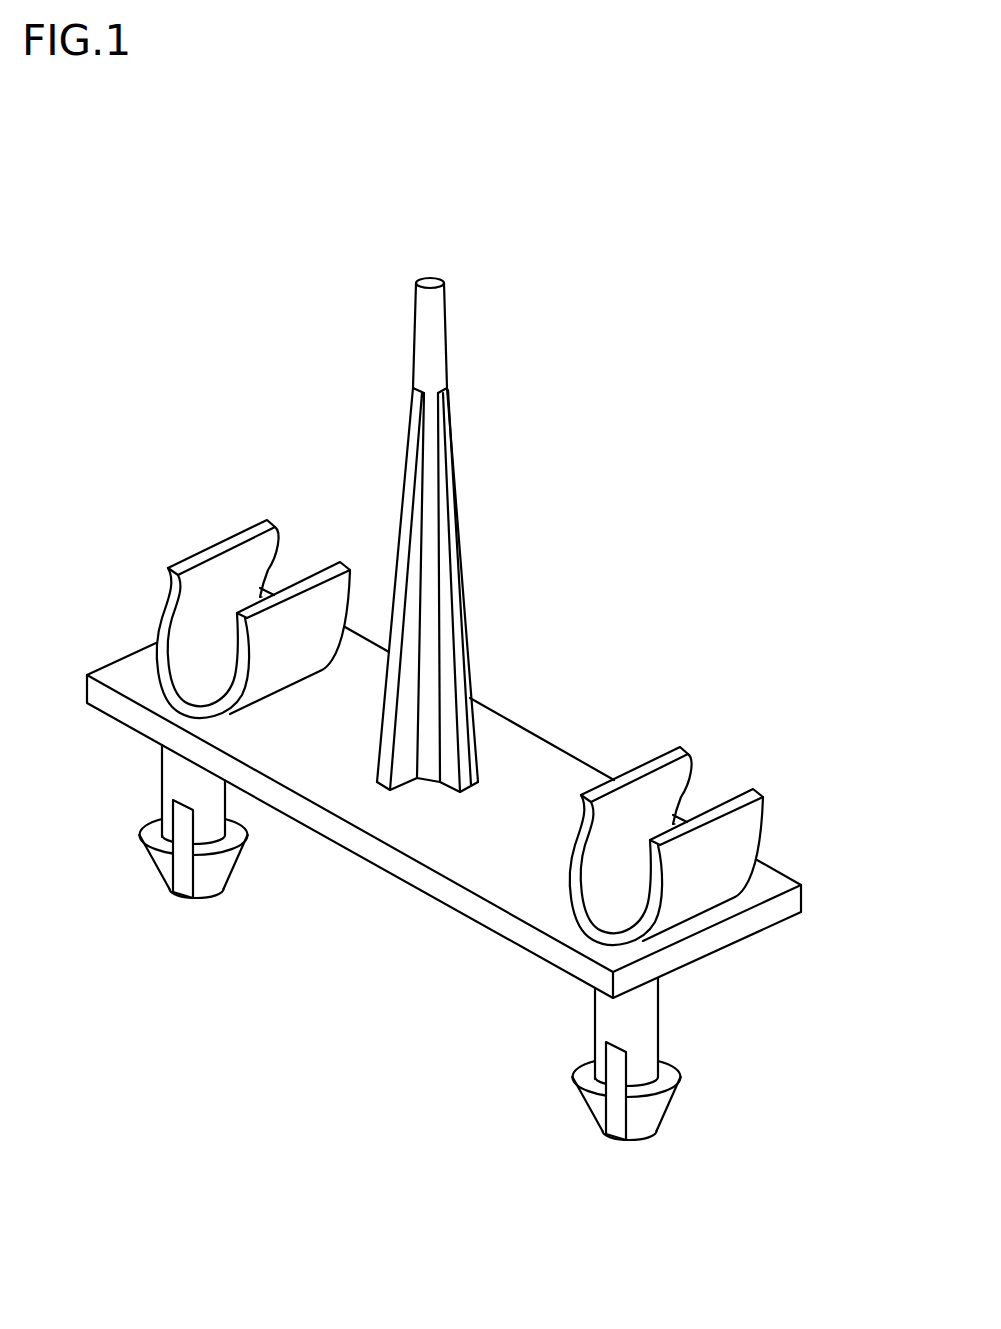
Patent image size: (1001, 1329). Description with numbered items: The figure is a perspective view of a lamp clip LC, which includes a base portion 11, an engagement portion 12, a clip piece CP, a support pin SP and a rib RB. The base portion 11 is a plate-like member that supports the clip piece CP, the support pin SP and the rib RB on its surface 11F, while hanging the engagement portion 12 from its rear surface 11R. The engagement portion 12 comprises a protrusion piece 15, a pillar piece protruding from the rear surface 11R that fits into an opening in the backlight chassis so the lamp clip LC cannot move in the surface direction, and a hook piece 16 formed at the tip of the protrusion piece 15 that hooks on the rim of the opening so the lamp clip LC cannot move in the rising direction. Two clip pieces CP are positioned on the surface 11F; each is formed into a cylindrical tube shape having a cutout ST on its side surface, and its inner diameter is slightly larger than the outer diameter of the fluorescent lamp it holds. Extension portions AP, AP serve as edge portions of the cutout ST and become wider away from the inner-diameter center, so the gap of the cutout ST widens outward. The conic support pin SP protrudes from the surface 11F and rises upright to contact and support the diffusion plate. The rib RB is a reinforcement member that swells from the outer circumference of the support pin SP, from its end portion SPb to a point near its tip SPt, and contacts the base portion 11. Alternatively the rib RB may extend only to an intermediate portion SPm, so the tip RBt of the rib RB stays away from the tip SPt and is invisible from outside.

The lamp clip LC is at (685, 239).
The base portion 11 is at (45, 612).
The surface 11F is at (134, 668).
The rear surface 11R is at (137, 728).
The engagement portion 12 is at (315, 875).
The protrusion piece 15 is at (213, 792).
The hook piece 16 is at (218, 872).
The support pin SP is at (518, 192).
The tip SPt is at (451, 267).
The intermediate portion SPm is at (505, 560).
The end portion SPb is at (501, 750).
The rib RB is at (478, 749).
The tip of the rib RBt is at (460, 391).
The clip piece CP is at (390, 521).
The extension portion AP is at (240, 534).
The cutout ST is at (296, 536).